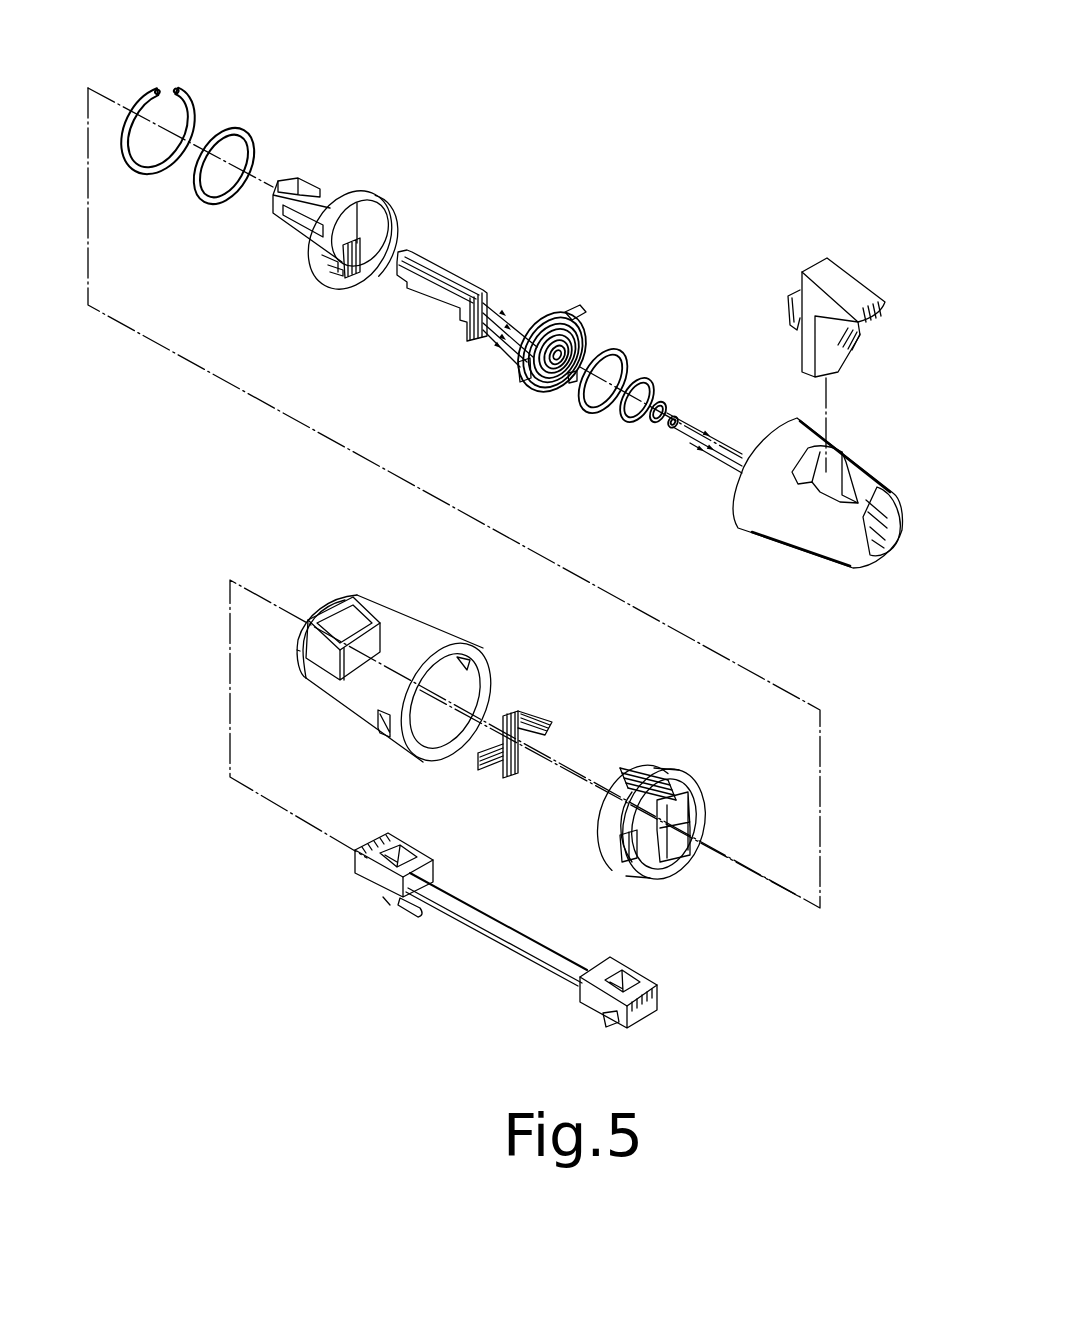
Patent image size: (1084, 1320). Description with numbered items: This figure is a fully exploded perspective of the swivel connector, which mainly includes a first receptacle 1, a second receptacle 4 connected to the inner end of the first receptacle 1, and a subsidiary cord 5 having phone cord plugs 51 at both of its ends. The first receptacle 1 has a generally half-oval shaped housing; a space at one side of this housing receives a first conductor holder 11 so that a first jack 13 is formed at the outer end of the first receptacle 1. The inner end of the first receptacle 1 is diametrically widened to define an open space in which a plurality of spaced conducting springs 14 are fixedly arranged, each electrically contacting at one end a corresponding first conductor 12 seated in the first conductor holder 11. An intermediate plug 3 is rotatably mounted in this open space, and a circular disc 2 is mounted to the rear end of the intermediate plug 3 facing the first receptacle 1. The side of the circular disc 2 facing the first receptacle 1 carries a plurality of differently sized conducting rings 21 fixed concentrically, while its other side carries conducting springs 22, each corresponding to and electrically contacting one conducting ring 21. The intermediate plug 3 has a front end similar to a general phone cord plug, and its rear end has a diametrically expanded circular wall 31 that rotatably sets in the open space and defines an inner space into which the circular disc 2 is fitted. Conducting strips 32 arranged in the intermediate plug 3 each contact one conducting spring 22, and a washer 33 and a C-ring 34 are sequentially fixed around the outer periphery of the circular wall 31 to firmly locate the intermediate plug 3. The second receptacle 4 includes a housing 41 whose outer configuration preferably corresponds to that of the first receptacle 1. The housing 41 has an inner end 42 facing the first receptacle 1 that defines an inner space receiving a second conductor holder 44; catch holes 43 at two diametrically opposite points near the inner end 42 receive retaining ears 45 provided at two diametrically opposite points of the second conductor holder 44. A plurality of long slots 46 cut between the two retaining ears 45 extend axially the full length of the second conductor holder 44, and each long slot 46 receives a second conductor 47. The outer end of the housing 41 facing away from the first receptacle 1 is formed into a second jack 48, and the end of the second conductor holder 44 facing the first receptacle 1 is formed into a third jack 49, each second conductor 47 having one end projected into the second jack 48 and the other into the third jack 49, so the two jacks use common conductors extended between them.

The first receptacle 1 is at (790, 560).
The first conductor holder 11 is at (850, 253).
The first conductor 12 is at (857, 347).
The first jack 13 is at (887, 523).
The conducting springs 14 is at (697, 460).
The circular disc 2 is at (587, 300).
The conducting rings 21 is at (593, 410).
The conducting springs 22 is at (500, 313).
The intermediate plug 3 is at (385, 192).
The circular wall 31 is at (332, 238).
The conducting strips 32 is at (438, 293).
The washer 33 is at (253, 133).
The C-ring 34 is at (193, 90).
The second receptacle 4 is at (313, 757).
The housing 41 is at (337, 705).
The inner end 42 is at (453, 692).
The catch holes 43 is at (387, 723).
The second conductor holder 44 is at (603, 823).
The retaining ears 45 is at (630, 847).
The long slots 46 is at (627, 767).
The second conductor 47 is at (497, 780).
The second jack 48 is at (313, 613).
The third jack 49 is at (677, 820).
The subsidiary cord 5 is at (523, 940).
The phone cord plugs 51 is at (377, 877).